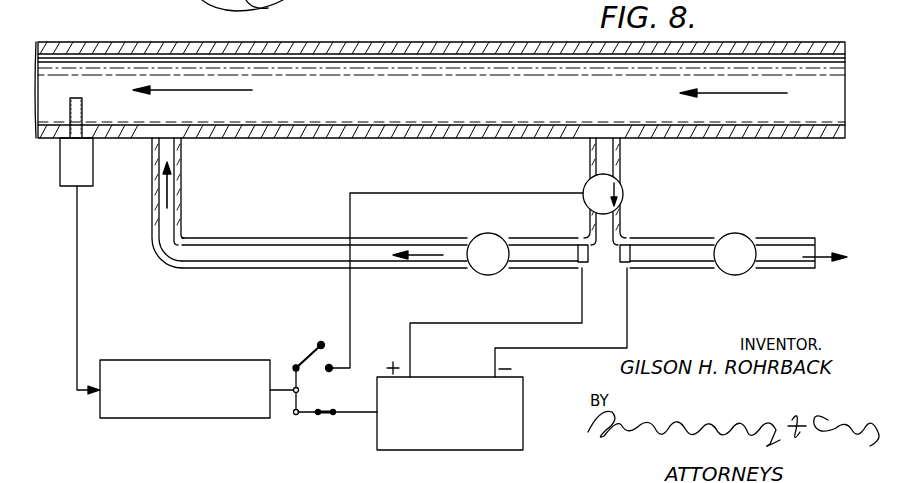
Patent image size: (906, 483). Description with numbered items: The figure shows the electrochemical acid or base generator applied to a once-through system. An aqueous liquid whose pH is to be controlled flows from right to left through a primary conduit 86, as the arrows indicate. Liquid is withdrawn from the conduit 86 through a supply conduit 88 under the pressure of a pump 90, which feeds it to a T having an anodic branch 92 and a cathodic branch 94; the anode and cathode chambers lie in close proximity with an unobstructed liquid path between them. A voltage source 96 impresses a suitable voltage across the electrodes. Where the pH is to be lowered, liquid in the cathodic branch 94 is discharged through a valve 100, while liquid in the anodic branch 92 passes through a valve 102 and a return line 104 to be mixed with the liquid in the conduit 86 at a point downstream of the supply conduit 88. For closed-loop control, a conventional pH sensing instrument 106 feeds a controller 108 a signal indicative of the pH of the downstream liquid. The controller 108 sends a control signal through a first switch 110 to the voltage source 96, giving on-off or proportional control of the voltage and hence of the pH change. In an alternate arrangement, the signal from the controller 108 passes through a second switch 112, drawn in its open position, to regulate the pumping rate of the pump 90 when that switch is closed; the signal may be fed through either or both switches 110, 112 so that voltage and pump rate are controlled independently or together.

The conduit 86 is at (537, 52).
The supply conduit 88 is at (620, 165).
The pump 90 is at (624, 194).
The anodic branch 92 is at (543, 238).
The cathodic branch 94 is at (665, 238).
The voltage source 96 is at (517, 387).
The valve 100 is at (740, 236).
The valve 102 is at (493, 275).
The return line 104 is at (181, 178).
The pH sensing instrument 106 is at (93, 172).
The controller 108 is at (195, 340).
The first switch 110 is at (300, 416).
The second switch 112 is at (311, 352).